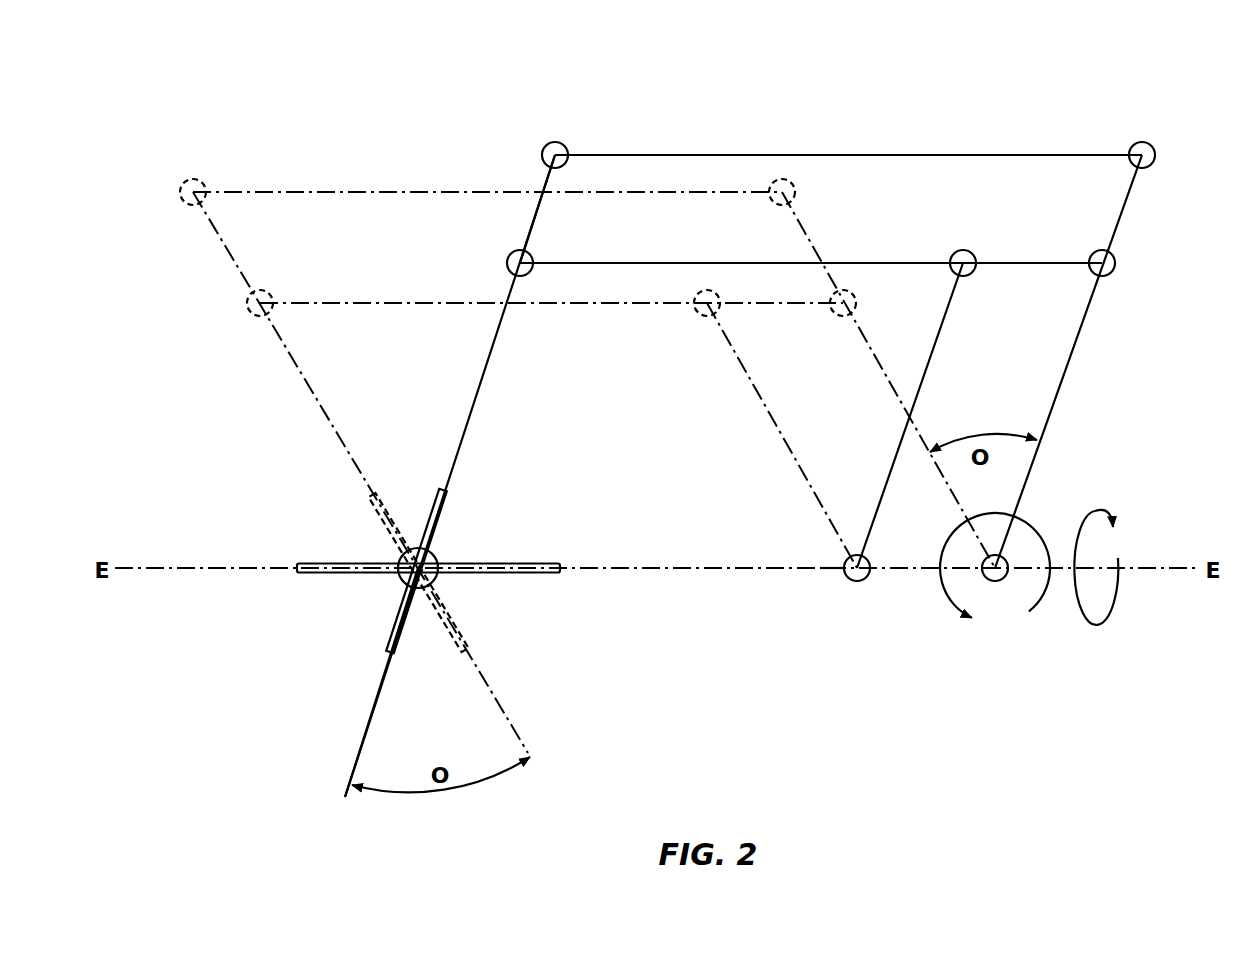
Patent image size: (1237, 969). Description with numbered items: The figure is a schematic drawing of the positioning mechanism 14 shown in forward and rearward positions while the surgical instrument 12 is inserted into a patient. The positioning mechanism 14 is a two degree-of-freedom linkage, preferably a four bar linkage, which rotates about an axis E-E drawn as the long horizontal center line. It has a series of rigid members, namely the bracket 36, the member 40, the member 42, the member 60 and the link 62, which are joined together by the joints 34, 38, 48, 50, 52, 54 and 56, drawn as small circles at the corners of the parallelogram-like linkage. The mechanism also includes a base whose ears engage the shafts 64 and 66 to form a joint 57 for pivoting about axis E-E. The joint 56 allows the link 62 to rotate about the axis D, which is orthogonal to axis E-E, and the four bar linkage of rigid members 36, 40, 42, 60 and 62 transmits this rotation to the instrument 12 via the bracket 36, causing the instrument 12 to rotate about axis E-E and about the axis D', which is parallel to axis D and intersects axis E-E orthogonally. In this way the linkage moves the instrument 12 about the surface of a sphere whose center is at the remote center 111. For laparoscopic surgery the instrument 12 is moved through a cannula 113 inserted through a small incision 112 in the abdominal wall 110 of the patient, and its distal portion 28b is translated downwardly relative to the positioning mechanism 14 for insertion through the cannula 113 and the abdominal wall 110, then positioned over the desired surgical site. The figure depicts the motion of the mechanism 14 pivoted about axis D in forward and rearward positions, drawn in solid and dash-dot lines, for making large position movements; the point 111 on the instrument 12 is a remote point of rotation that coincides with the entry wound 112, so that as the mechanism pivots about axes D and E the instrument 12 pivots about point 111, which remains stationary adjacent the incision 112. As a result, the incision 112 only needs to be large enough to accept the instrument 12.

The instrument 12 is at (478, 398).
The positioning mechanism 14 is at (733, 415).
The distal portion 28b is at (368, 722).
The joint 34 is at (509, 258).
The bracket 36 is at (540, 212).
The joint 38 is at (549, 142).
The rigid member 40 is at (667, 155).
The rigid member 42 is at (893, 263).
The joint 48 is at (1135, 145).
The joint 50 is at (1115, 262).
The joint 52 is at (965, 250).
The joint 54 is at (856, 582).
The joint 56 is at (1027, 530).
The joint 57 is at (1100, 555).
The rigid member 60 is at (925, 375).
The link 62 is at (1080, 345).
The shaft 64 is at (820, 567).
The shaft 66 is at (1027, 572).
The abdominal wall 110 is at (340, 565).
The remote center 111 is at (435, 556).
The incision 112 is at (400, 580).
The cannula 113 is at (433, 505).
The axis D- D is at (1013, 617).
The axis D'- D' is at (468, 594).